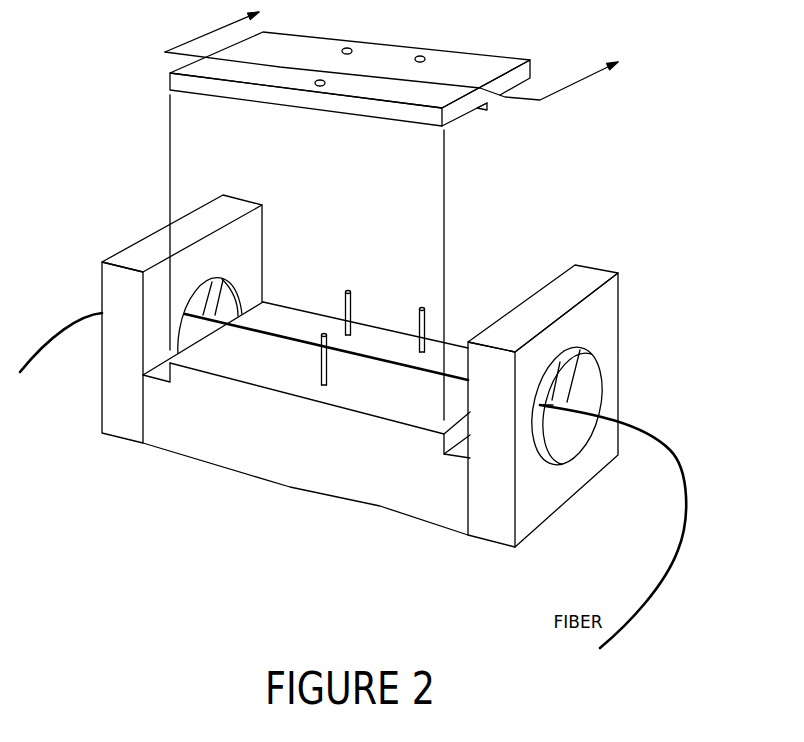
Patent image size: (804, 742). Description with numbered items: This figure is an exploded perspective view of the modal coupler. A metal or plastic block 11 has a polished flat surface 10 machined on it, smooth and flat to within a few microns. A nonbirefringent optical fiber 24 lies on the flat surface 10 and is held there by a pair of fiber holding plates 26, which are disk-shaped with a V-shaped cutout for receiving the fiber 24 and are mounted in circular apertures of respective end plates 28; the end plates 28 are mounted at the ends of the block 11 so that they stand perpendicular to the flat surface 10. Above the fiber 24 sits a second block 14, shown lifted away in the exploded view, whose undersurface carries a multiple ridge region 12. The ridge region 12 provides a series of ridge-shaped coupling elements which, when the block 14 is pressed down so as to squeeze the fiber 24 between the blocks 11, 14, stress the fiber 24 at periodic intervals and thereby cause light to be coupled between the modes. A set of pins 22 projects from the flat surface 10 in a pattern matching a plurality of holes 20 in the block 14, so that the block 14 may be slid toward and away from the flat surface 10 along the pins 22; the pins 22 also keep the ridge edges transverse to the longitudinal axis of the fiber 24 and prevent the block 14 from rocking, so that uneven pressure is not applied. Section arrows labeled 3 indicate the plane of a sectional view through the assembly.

The section line 3- 3 is at (391, 50).
The flat surface 10 is at (350, 390).
The block 11 is at (369, 371).
The ridge region 12 is at (487, 110).
The second block 14 is at (350, 75).
The holes 20 is at (324, 80).
The pins 22 is at (416, 323).
The fiber 24 is at (264, 336).
The fiber holding plates 26 is at (191, 334).
The end plates 28 is at (148, 246).